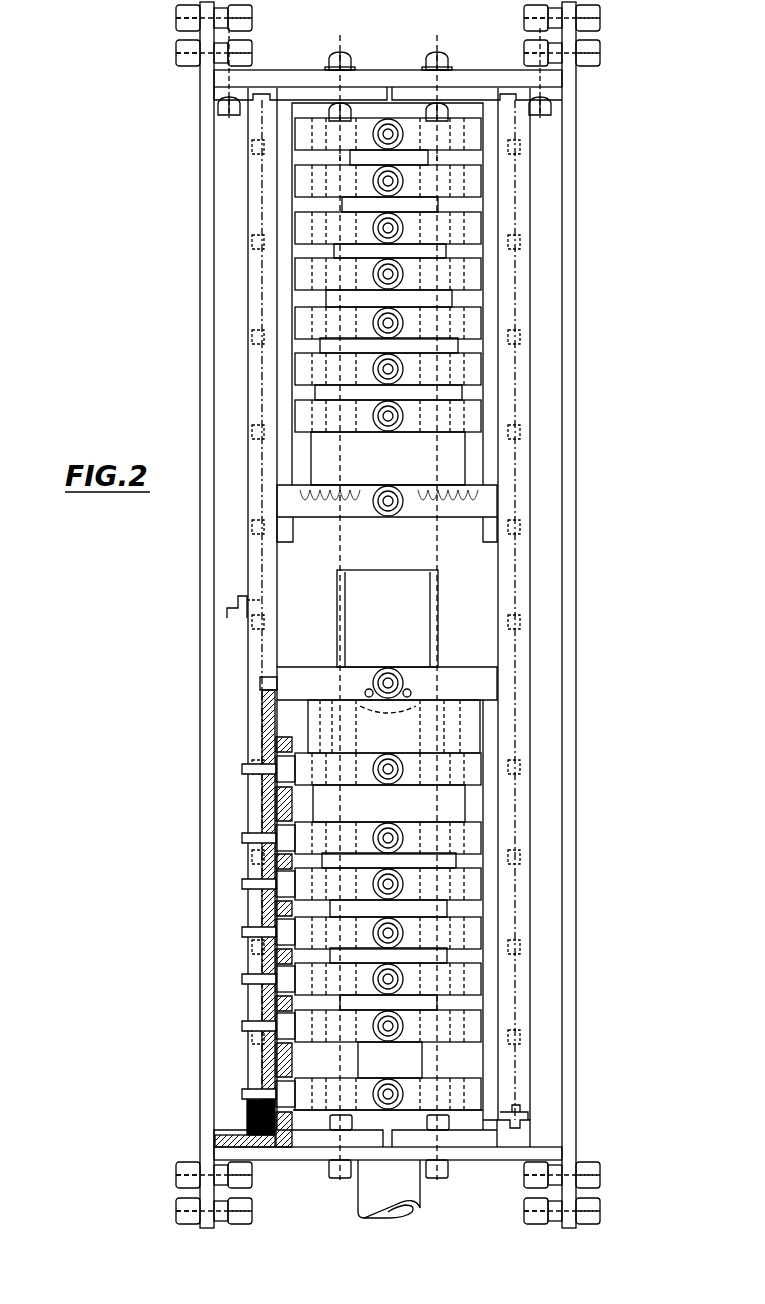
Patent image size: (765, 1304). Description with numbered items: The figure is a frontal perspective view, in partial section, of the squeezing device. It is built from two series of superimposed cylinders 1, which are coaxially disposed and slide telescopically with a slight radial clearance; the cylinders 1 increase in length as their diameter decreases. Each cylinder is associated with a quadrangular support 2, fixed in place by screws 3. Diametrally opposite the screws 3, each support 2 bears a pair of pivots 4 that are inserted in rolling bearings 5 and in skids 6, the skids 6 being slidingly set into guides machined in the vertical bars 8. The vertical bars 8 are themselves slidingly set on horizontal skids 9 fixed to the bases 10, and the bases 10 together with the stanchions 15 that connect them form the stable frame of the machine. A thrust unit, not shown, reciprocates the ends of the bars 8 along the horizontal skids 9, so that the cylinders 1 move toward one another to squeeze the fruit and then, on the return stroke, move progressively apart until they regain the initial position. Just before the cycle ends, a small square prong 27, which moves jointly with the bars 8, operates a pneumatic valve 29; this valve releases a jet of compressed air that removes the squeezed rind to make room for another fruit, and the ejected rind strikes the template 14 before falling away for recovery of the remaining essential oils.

The cylinders 1 is at (447, 300).
The quadrangular supports 2 is at (468, 871).
The screws 3 is at (381, 754).
The pivots 4 is at (268, 886).
The rolling bearings 5 is at (270, 823).
The skids 6 is at (272, 870).
The vertical bars 8 is at (252, 396).
The horizontal skids 9 is at (242, 1125).
The bases 10 is at (473, 80).
The template 14 is at (405, 606).
The stanchions 15 is at (206, 150).
The small square prong 27 is at (236, 612).
The pneumatic valve 29 is at (367, 689).